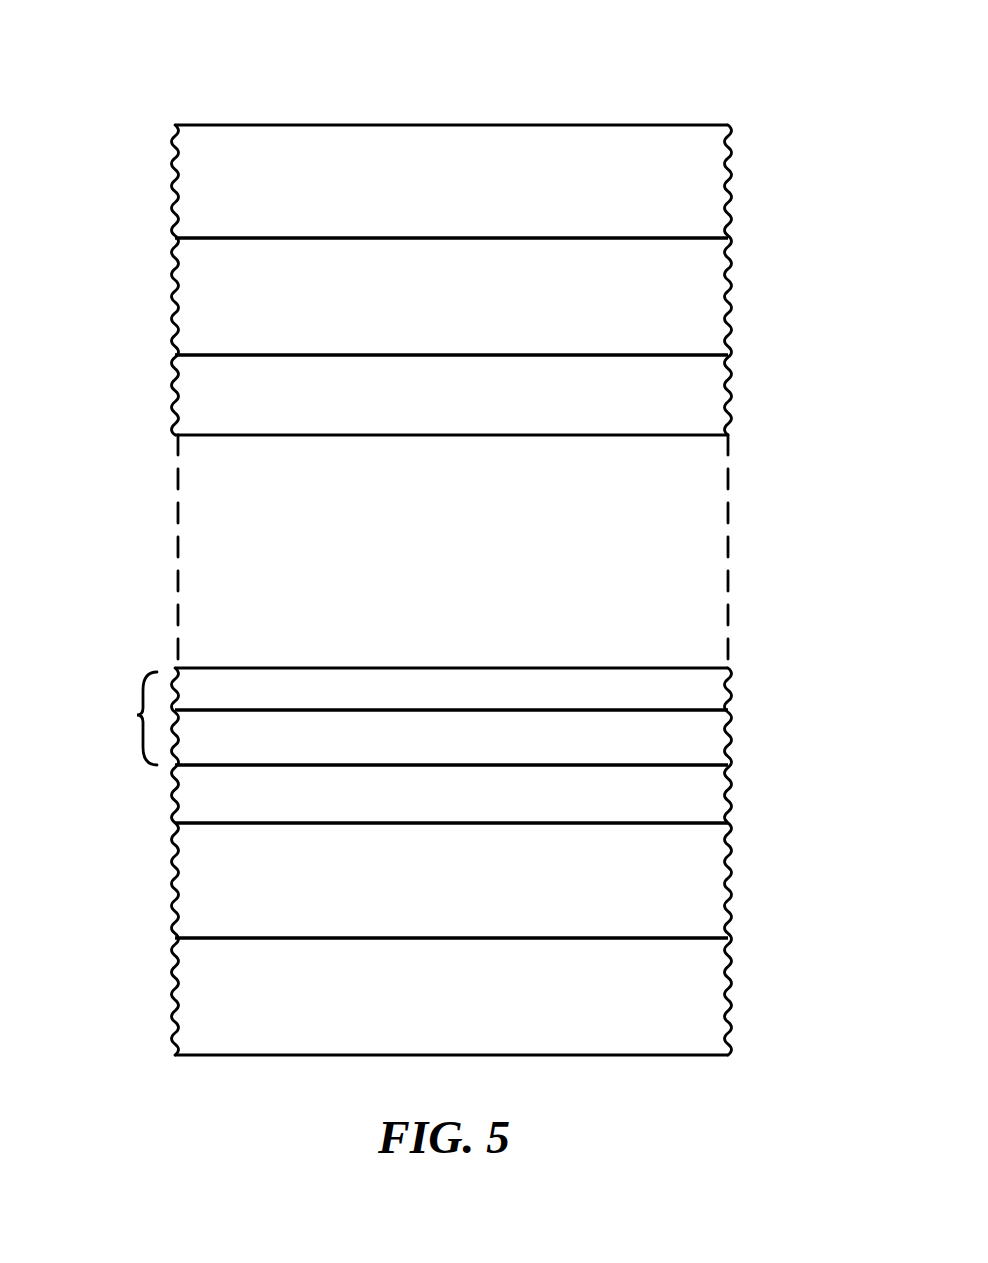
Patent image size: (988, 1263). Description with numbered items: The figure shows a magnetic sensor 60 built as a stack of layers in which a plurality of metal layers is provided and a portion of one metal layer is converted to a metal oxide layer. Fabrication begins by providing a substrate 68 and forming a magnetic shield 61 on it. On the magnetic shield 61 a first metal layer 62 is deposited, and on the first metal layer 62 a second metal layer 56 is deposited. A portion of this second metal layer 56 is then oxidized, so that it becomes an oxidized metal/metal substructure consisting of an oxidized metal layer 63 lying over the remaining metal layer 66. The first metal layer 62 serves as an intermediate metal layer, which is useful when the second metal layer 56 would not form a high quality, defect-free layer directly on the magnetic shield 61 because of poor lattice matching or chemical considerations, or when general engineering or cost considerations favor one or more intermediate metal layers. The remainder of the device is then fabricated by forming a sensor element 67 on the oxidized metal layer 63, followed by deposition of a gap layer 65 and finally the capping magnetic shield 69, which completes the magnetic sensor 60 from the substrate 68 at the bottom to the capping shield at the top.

The magnetic sensor 60 is at (90, 103).
The capping magnetic shield 69 is at (734, 189).
The gap layer 65 is at (734, 310).
The sensor element 67 is at (734, 398).
The second metal layer 56 is at (137, 716).
The oxidized metal layer 63 is at (733, 672).
The metal layer 66 is at (730, 735).
The first metal layer 62 is at (733, 795).
The magnetic shield 61 is at (733, 886).
The substrate 68 is at (740, 1018).